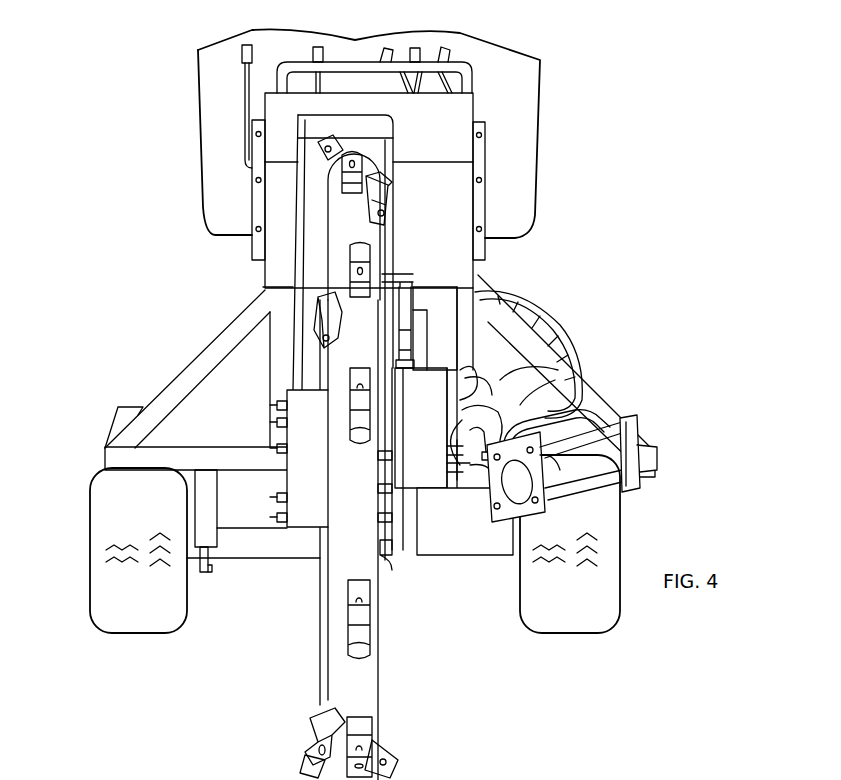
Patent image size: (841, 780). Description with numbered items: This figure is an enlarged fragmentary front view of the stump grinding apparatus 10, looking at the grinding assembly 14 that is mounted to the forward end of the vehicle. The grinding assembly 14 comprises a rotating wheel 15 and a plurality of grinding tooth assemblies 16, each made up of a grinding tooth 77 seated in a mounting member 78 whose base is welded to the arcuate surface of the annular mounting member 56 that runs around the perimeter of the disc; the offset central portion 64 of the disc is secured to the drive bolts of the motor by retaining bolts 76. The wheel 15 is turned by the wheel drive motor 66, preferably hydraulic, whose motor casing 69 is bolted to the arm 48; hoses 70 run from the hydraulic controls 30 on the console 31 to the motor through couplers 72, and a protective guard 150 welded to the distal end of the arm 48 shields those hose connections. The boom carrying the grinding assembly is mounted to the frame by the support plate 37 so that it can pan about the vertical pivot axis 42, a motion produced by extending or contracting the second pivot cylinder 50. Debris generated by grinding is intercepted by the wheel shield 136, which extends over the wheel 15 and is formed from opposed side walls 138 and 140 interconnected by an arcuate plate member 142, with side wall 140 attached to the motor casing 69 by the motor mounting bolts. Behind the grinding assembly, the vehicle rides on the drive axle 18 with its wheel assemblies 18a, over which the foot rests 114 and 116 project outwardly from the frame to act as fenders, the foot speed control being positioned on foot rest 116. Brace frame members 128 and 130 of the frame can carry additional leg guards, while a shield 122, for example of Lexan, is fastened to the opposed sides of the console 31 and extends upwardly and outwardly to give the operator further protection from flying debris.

The stump grinding apparatus 10 is at (640, 98).
The grinding assembly 14 is at (126, 779).
The wheel 15 is at (388, 628).
The grinding tooth assemblies 16 is at (392, 174).
The wheel axle 18 is at (238, 573).
The wheel assemblies 18a is at (118, 627).
The hydraulic controls 30 is at (460, 35).
The console 31 is at (465, 112).
The support plate 37 is at (430, 293).
The vertical pivot axis 42 is at (783, 773).
The arm 48 is at (458, 370).
The second pivot cylinder 50 is at (600, 475).
The annular mounting member 56 is at (372, 690).
The central portion 64 is at (307, 530).
The wheel drive motor 66 is at (408, 563).
The motor casing 69 is at (423, 368).
The hoses 70 is at (533, 407).
The couplers 72 is at (468, 438).
The retaining bolts 76 is at (274, 496).
The grinding tooth 77 is at (360, 445).
The mounting member 78 is at (360, 583).
The foot rest 114 is at (133, 393).
The foot rest 116 is at (645, 435).
The shield 122 is at (522, 125).
The brace frame member 128 is at (178, 390).
The brace frame member 130 is at (597, 403).
The wheel shield 136 is at (297, 218).
The side wall 138 is at (297, 170).
The side wall 140 is at (393, 230).
The arcuate plate member 142 is at (333, 120).
The protective guard 150 is at (463, 547).